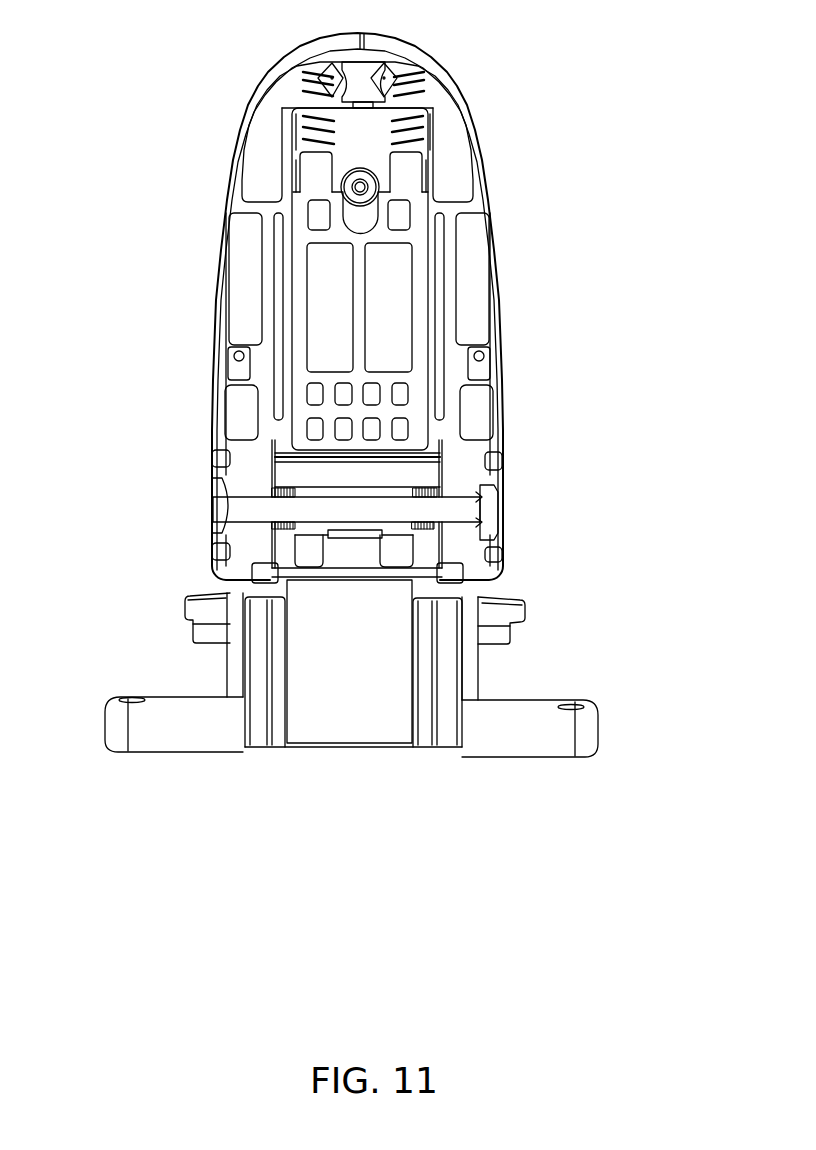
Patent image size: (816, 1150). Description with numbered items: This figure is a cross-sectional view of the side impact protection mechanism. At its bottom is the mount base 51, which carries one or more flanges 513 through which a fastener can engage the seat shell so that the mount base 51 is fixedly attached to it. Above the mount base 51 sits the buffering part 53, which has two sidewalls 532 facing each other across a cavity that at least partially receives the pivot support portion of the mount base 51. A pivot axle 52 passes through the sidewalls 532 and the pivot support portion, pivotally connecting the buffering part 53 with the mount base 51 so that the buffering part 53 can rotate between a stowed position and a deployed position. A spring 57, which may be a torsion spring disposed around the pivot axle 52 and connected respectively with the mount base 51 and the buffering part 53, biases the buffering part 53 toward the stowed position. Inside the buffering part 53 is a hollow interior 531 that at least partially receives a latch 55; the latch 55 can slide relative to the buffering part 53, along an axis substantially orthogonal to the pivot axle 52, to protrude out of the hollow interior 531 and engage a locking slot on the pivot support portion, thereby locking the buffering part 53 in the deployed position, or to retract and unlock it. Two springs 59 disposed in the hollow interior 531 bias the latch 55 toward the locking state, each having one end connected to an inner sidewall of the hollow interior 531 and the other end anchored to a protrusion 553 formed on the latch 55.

The mount base 51 is at (383, 651).
The pivot axle 52 is at (271, 508).
The buffering part 53 is at (473, 113).
The latch 55 is at (297, 370).
The spring 57 is at (271, 525).
The spring 59 is at (331, 123).
The flange 513 is at (553, 745).
The hollow interior 531 is at (300, 147).
The sidewalls 532 is at (212, 567).
The protrusion 553 is at (316, 168).